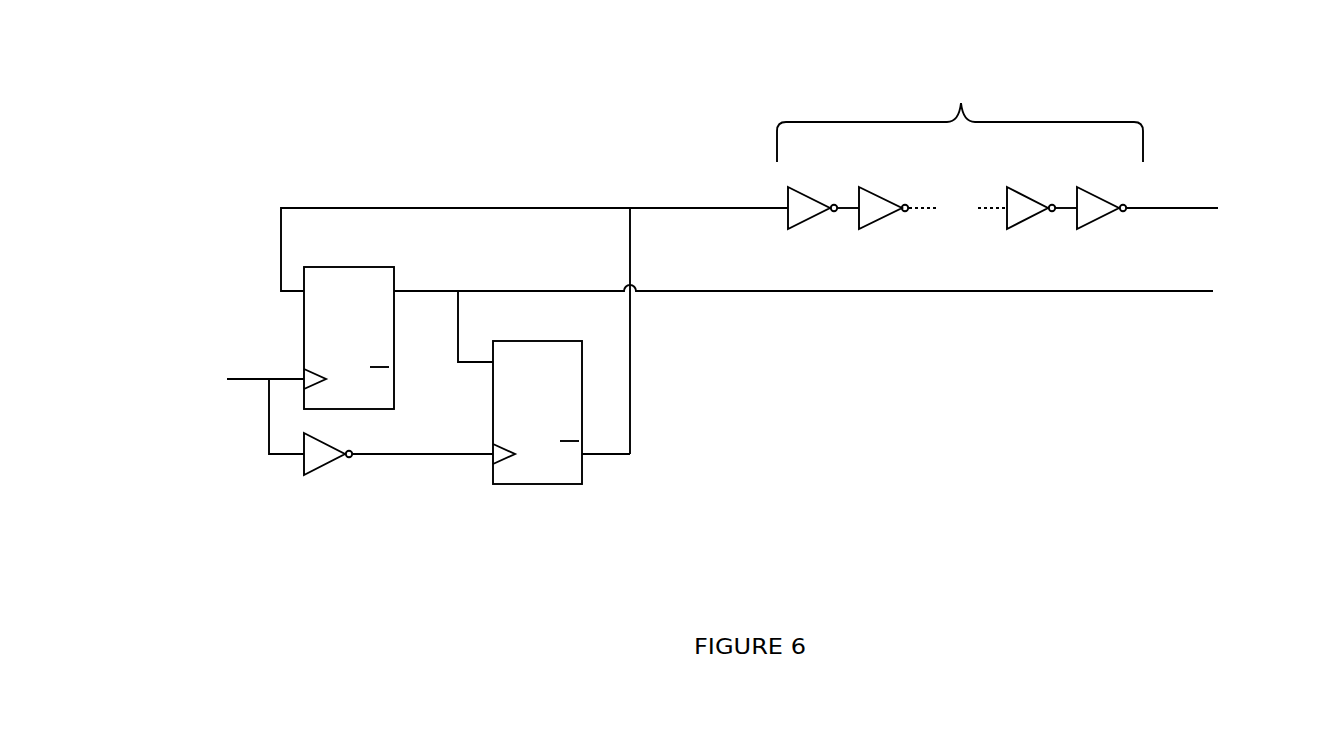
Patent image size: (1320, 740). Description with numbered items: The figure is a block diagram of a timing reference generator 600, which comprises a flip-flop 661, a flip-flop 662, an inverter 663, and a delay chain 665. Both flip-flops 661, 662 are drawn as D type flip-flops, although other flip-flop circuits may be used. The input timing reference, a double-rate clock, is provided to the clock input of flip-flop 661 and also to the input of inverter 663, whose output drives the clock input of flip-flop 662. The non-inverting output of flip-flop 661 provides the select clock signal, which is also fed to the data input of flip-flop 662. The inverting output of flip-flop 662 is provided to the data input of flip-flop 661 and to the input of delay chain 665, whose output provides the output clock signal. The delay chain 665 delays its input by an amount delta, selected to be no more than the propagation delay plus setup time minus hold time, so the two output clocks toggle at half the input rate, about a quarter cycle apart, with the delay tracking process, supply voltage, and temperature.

The timing reference generator 600 is at (204, 74).
The flip-flop 661 is at (343, 267).
The flip-flop 662 is at (510, 345).
The inverter 663 is at (316, 469).
The delay chain 665 is at (789, 104).